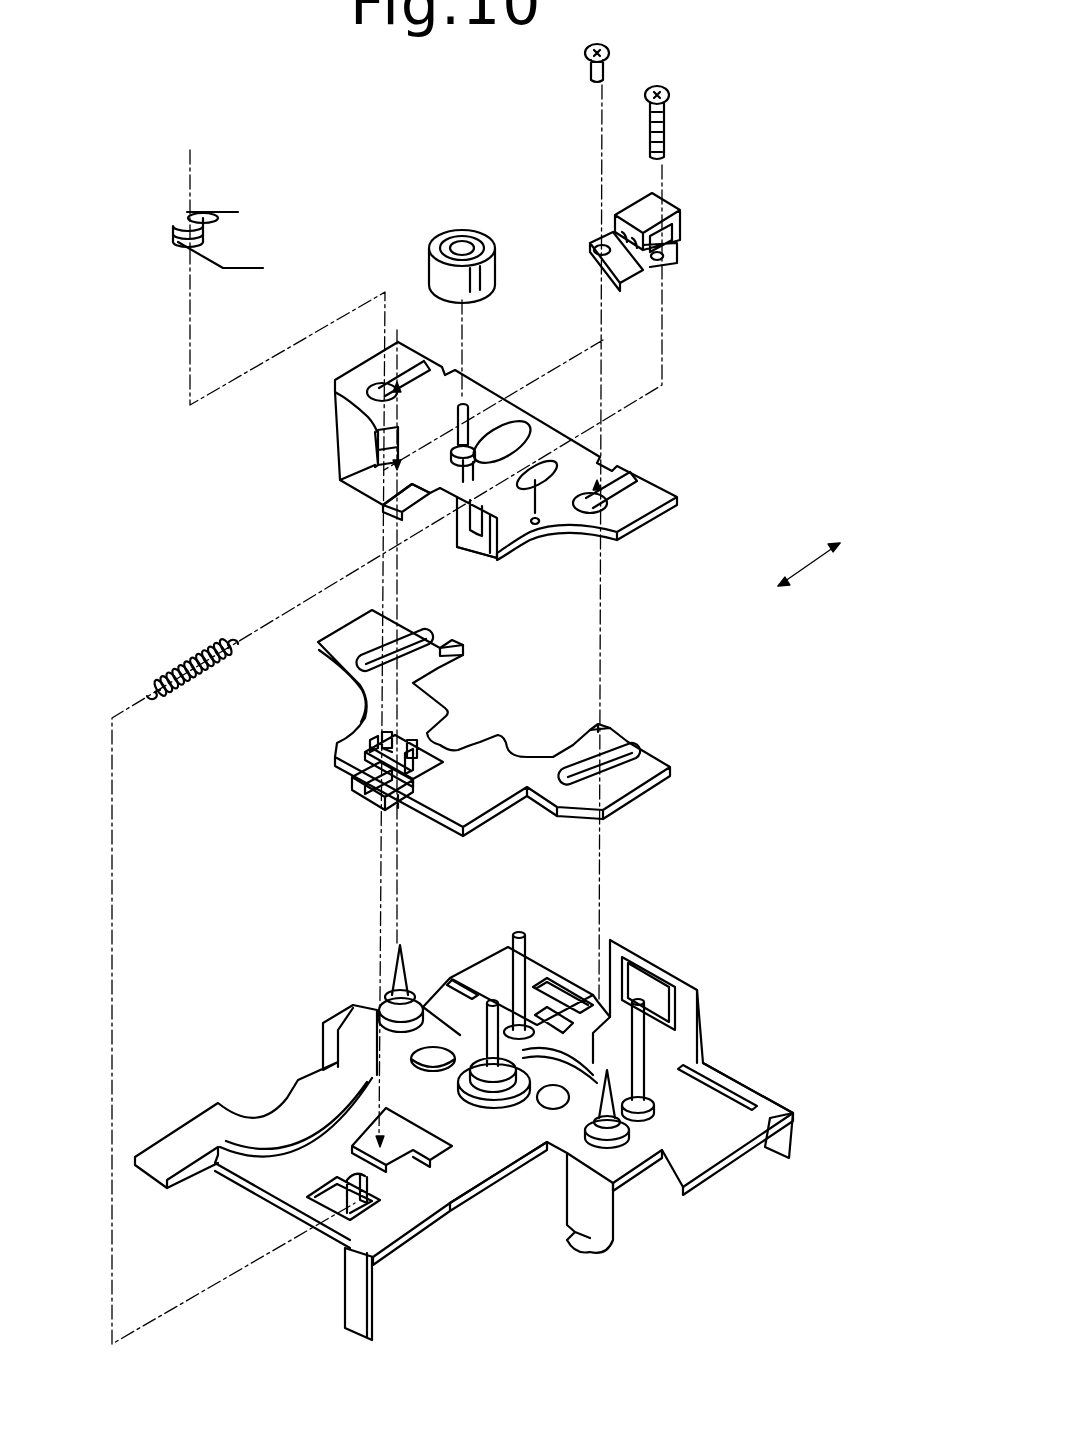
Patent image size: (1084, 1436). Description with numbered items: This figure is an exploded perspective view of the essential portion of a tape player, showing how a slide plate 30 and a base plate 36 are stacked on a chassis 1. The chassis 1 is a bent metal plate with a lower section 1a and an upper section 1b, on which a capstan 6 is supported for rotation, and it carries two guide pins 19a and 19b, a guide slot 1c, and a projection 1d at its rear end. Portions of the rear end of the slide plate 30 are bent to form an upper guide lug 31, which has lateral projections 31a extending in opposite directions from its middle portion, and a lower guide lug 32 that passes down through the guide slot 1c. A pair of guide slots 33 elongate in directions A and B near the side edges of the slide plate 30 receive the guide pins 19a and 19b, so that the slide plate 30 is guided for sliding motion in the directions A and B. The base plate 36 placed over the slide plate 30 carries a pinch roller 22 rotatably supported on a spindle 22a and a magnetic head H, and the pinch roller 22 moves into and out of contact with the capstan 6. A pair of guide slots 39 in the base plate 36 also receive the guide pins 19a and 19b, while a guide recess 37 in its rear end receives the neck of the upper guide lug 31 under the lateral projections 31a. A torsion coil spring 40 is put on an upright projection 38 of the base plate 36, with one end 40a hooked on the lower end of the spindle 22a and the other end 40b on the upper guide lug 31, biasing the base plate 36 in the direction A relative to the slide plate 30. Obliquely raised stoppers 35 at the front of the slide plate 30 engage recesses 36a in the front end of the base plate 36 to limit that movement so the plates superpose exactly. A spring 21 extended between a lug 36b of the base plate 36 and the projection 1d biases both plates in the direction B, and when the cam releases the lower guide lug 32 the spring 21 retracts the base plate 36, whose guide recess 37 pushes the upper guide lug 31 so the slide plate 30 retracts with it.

The chassis 1 is at (448, 1227).
The lower section 1a is at (750, 1113).
The upper section 1b is at (463, 1160).
The guide slot 1c is at (397, 1149).
The projection 1d is at (369, 1189).
The capstan 6 is at (527, 958).
The guide pin 19a is at (410, 982).
The guide pin 19b is at (593, 1113).
The spring 21 is at (180, 663).
The pinch roller 22 is at (497, 260).
The spindle 22a is at (470, 410).
The slide plate 30 is at (628, 731).
The upper guide lug 31 is at (382, 732).
The lateral projections 31a is at (375, 745).
The lower guide lug 32 is at (370, 795).
The guide slots 33 is at (410, 640).
The stoppers 35 is at (463, 651).
The base plate 36 is at (678, 485).
The recesses 36a is at (468, 375).
The lug 36b is at (458, 525).
The guide recess 37 is at (403, 506).
The upright projection 38 is at (373, 440).
The guide slots 39 is at (413, 362).
The torsion coil spring 40 is at (172, 231).
The one end 40a is at (217, 208).
The other end 40b is at (238, 273).
The magnetic head H is at (670, 213).
The direction A is at (824, 547).
The direction B is at (765, 595).